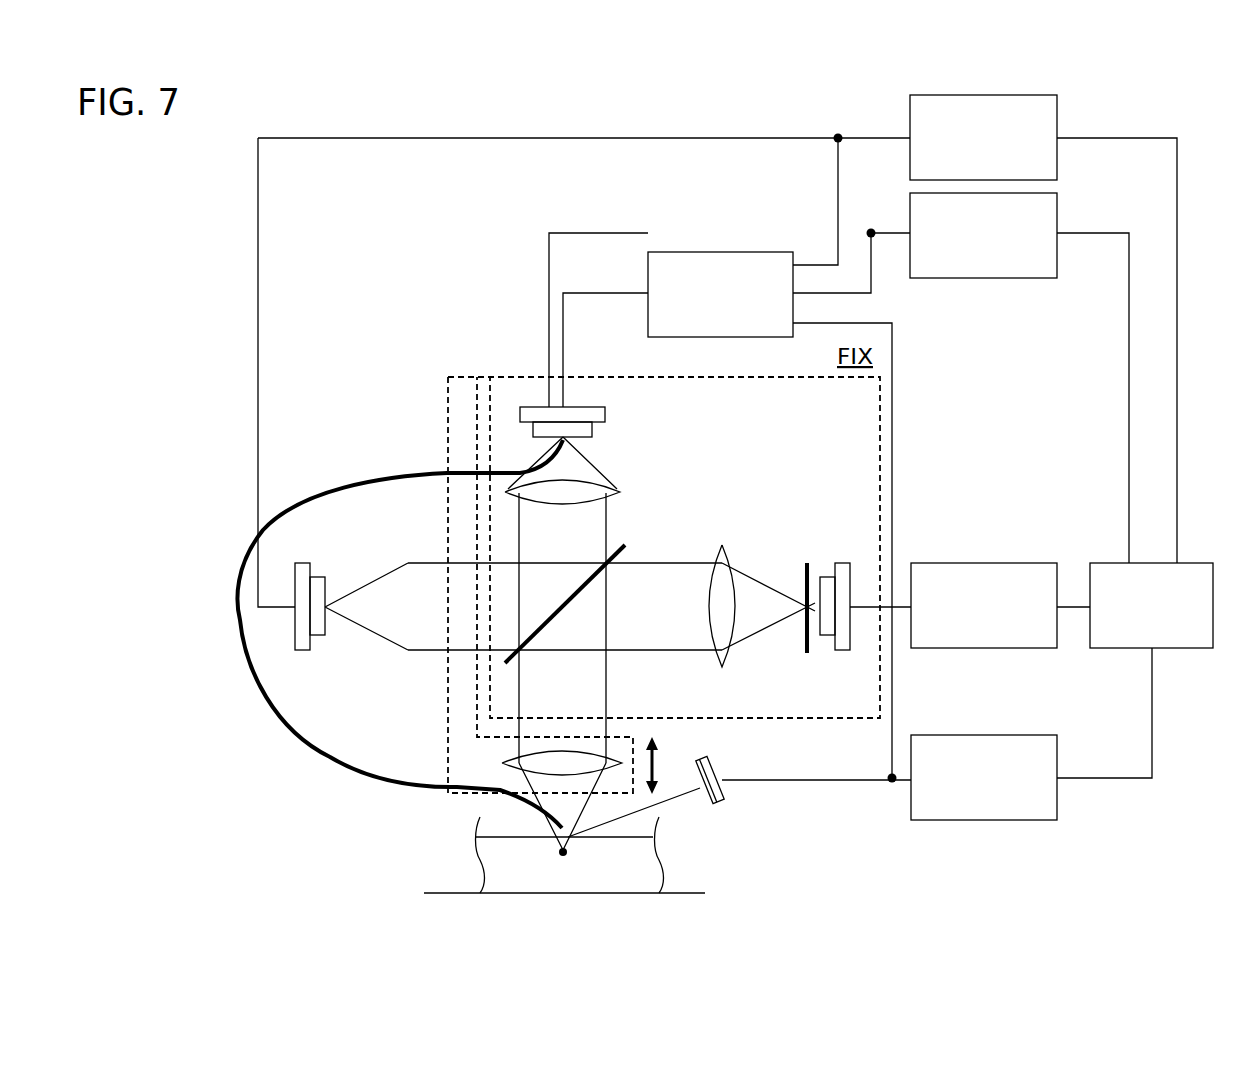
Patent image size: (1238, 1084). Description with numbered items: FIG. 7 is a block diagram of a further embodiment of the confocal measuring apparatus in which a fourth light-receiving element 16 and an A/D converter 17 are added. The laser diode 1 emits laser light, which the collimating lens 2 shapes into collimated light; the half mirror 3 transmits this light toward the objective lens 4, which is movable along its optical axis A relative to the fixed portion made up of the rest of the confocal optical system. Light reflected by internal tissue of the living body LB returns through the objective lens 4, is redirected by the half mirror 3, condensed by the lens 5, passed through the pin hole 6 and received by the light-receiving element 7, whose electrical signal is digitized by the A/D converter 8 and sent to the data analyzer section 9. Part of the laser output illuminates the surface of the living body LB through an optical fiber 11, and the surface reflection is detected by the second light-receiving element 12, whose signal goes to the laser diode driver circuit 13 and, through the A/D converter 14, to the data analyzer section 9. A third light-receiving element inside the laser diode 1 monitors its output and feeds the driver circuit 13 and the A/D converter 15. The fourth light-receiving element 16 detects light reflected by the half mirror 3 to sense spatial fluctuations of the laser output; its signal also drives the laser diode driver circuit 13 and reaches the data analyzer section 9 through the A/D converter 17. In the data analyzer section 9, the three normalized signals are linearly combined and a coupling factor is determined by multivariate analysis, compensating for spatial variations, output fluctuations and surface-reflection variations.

The laser diode 1 is at (600, 412).
The collimating lens 2 is at (618, 490).
The half mirror 3 is at (624, 546).
The objective lens 4 is at (502, 763).
The lens 5 is at (722, 547).
The pin hole 6 is at (807, 561).
The light-receiving element 7 is at (843, 561).
The A/D converter 8 is at (1003, 562).
The data analyzer section 9 is at (1190, 562).
The optical fiber 11 is at (400, 478).
The second light-receiving element 12 is at (719, 796).
The laser diode driver circuit 13 is at (648, 266).
The A/D converter 14 is at (1000, 734).
The A/D converter 15 is at (1057, 214).
The fourth light-receiving element 16 is at (312, 562).
The A/D converter 17 is at (1057, 113).
The optical axis A is at (655, 760).
The living body LB is at (650, 862).